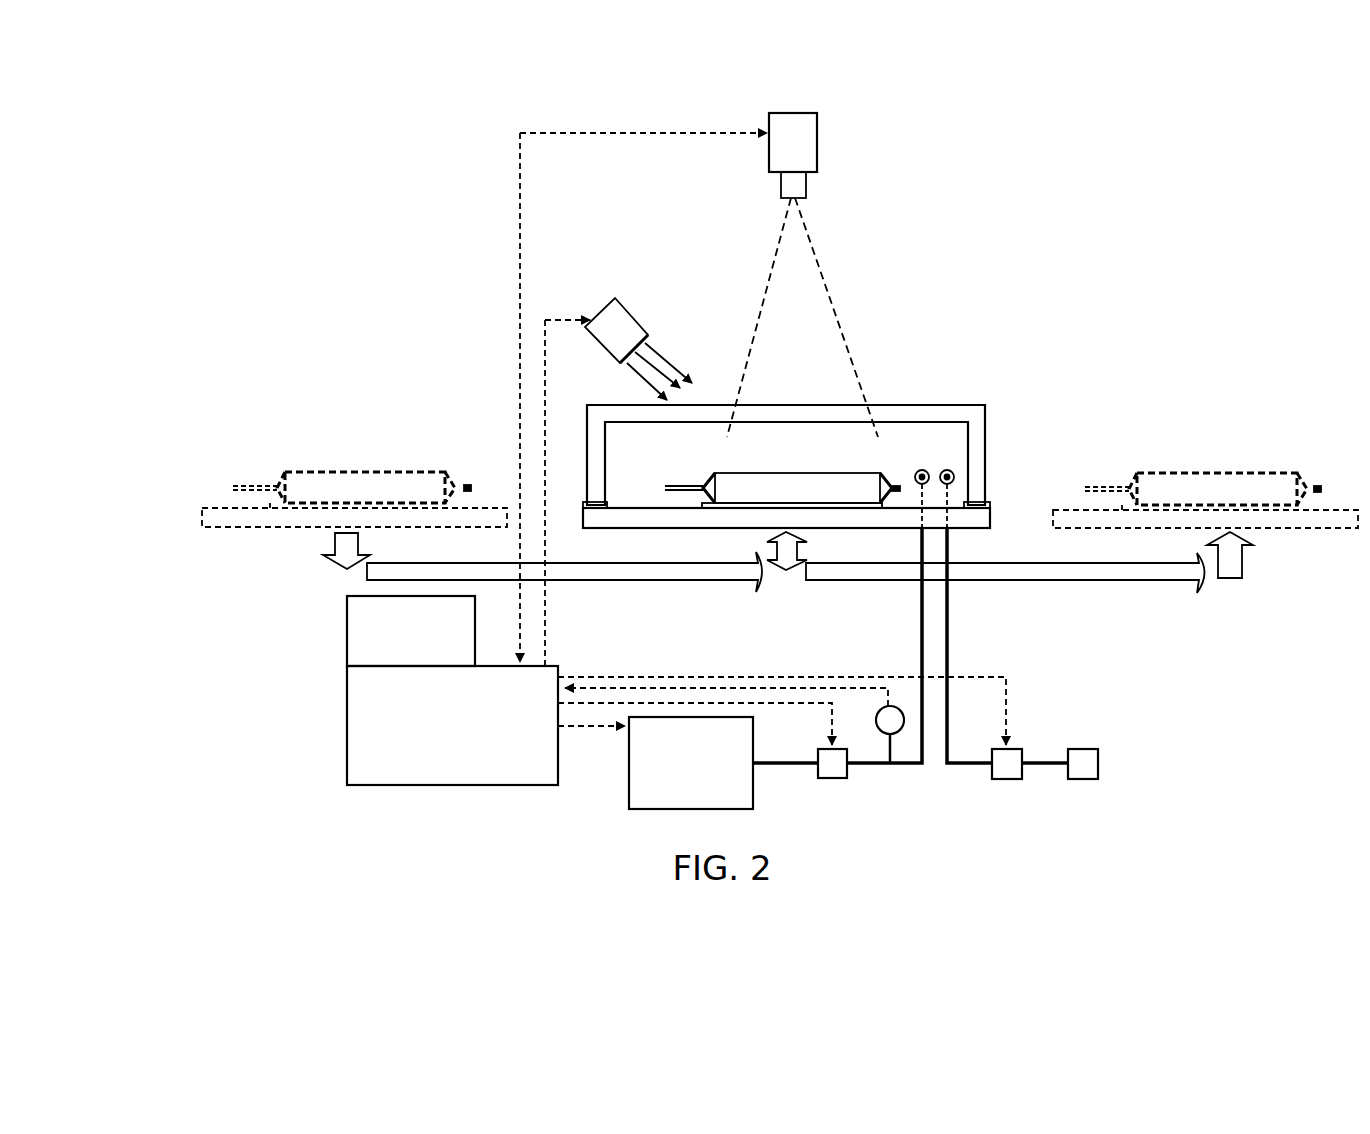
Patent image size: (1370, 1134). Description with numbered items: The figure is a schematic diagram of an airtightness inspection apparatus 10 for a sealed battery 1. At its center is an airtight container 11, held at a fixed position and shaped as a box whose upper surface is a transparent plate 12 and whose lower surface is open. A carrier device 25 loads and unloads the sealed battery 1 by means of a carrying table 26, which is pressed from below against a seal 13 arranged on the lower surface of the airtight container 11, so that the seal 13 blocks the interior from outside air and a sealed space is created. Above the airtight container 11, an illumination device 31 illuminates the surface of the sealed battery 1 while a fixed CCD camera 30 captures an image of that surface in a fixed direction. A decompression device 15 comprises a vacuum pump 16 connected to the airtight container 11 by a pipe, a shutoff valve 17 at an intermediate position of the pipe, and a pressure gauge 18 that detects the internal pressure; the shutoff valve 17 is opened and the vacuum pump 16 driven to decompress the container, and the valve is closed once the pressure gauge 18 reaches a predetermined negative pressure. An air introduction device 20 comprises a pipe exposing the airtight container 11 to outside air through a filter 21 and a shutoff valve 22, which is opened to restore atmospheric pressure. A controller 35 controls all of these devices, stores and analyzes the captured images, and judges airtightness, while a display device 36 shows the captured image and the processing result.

The sealed battery 1 is at (778, 472).
The airtightness inspection apparatus 10 is at (925, 240).
The airtight container 11 is at (995, 405).
The transparent plate 12 is at (903, 410).
The seal 13 is at (607, 507).
The decompression device 15 is at (808, 672).
The vacuum pump 16 is at (629, 783).
The shutoff valve 17 is at (832, 779).
The pressure gauge 18 is at (885, 738).
The air introduction device 20 is at (1037, 700).
The filter 21 is at (1080, 752).
The shutoff valve 22 is at (1008, 772).
The carrier device 25 is at (488, 443).
The carrying table 26 is at (287, 528).
The CCD camera 30 is at (810, 143).
The illumination device 31 is at (625, 327).
The controller 35 is at (347, 724).
The display device 36 is at (347, 624).